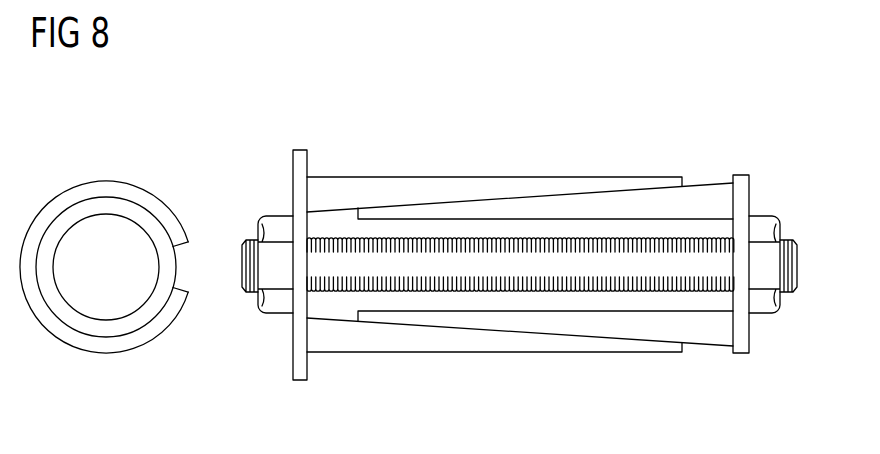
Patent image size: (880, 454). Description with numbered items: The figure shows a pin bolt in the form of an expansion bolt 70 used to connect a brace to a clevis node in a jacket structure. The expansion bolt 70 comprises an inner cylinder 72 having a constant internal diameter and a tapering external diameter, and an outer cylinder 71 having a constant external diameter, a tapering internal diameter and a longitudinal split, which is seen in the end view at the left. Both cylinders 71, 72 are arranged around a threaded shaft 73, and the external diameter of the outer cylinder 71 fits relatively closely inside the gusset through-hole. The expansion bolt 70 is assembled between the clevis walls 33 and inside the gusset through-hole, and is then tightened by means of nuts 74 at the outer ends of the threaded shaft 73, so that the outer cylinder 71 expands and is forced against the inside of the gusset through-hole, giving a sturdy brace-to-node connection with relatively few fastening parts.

The expansion bolt 70 is at (551, 152).
The outer cylinder 71 is at (107, 187).
The inner cylinder 72 is at (106, 330).
The threaded shaft 73 is at (704, 268).
The nuts 74 is at (272, 305).
The clevis walls 33 is at (740, 176).